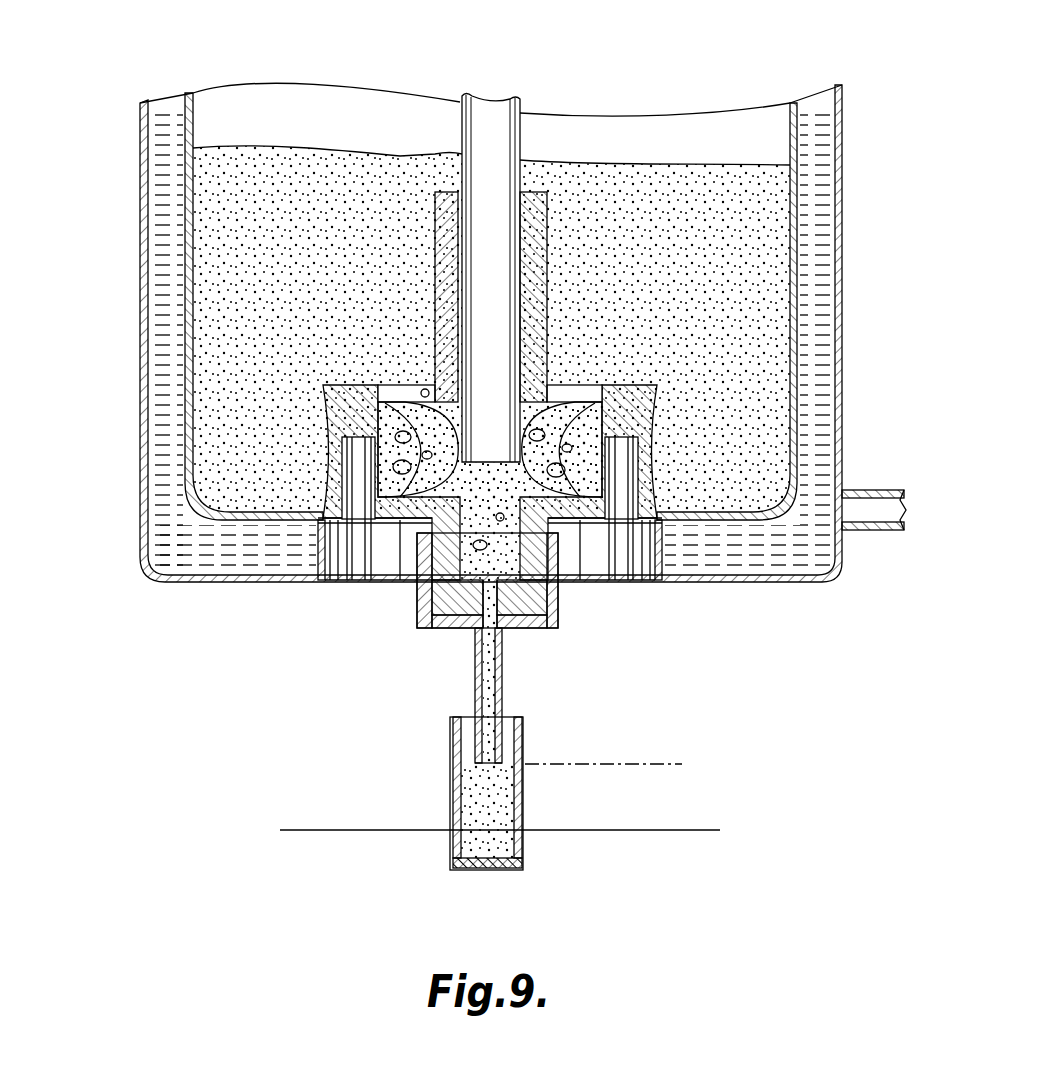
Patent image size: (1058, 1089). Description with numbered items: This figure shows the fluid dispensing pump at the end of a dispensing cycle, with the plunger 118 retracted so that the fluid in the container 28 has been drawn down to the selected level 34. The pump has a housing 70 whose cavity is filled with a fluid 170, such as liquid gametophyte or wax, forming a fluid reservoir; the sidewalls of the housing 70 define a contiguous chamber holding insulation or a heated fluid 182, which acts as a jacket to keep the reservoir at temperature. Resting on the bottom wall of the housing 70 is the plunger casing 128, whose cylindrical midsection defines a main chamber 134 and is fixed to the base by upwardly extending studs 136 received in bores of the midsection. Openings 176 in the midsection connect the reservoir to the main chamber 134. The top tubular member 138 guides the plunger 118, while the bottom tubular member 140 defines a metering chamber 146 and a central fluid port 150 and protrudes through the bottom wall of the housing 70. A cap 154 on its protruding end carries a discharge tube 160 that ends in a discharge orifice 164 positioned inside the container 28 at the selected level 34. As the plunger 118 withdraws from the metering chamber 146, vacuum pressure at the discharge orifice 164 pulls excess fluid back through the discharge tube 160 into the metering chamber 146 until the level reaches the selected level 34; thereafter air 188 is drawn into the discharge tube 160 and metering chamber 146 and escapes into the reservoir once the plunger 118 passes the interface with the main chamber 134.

The housing 70 is at (139, 162).
The plunger 118 is at (481, 126).
The fluid 170 is at (633, 165).
The top tubular member 138 is at (440, 272).
The plunger casing 128 is at (325, 386).
The openings 176 is at (578, 393).
The studs 136 is at (657, 387).
The main chamber 134 is at (548, 432).
The air 188 is at (342, 478).
The cap 154 is at (417, 598).
The bottom tubular member 140 is at (558, 598).
The metering chamber 146 is at (478, 572).
The fluid port 150 is at (528, 628).
The discharge tube 160 is at (505, 700).
The discharge orifice 164 is at (490, 768).
The container 28 is at (455, 778).
The selected level 34 is at (615, 764).
The heated fluid 182 is at (806, 556).